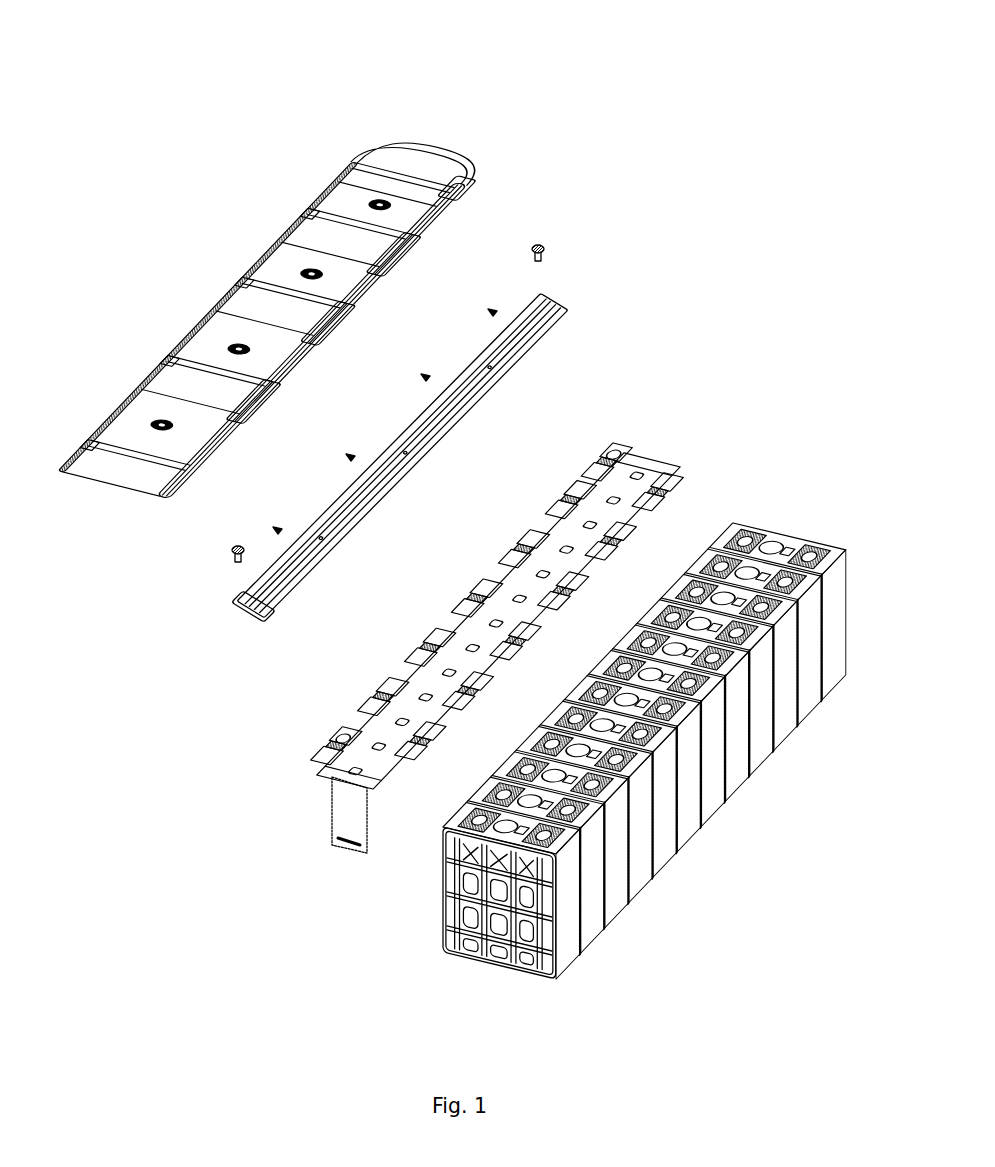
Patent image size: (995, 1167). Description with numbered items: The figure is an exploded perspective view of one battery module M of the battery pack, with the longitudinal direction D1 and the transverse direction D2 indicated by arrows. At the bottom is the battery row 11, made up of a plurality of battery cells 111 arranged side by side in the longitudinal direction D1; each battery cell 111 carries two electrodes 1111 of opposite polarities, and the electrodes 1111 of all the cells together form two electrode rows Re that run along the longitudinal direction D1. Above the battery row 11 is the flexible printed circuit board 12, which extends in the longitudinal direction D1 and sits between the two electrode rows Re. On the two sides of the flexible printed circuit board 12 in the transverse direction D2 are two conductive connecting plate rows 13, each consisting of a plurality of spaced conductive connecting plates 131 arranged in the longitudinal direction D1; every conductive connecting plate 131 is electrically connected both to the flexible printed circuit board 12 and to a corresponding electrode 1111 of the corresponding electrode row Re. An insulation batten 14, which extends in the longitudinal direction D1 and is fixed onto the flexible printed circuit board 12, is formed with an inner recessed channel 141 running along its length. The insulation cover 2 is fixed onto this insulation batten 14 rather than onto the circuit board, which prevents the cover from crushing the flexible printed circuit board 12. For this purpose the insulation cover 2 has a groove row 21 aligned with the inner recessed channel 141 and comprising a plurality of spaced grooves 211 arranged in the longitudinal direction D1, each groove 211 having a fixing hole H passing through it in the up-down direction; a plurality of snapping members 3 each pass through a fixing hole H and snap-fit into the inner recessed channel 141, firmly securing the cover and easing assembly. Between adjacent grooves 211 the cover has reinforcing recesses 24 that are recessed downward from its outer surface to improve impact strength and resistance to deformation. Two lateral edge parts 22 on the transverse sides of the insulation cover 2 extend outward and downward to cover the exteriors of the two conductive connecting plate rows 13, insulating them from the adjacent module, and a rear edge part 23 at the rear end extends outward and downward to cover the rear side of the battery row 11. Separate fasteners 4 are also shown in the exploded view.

The insulation cover 2 is at (453, 140).
The groove row 21 is at (303, 137).
The lateral edge part 22 is at (452, 229).
The rear edge part 23 is at (480, 186).
The reinforcing recess 24 is at (258, 410).
The groove 211 is at (150, 390).
The fixing hole H is at (157, 425).
The snapping member 3 is at (274, 529).
The bolt 4 is at (234, 547).
The insulation batten 14 is at (487, 410).
The inner recessed channel 141 is at (252, 592).
The conductive connecting plate row 13 is at (688, 466).
The conductive connecting plate 131 is at (674, 496).
The flexible printed circuit board 12 is at (340, 803).
The battery row 11 is at (636, 773).
The battery cell 111 is at (830, 683).
The electrode 1111 is at (500, 790).
The electrode row Re is at (762, 514).
The battery module M is at (98, 202).
The longitudinal direction D1 is at (75, 120).
The transverse direction D2 is at (177, 96).